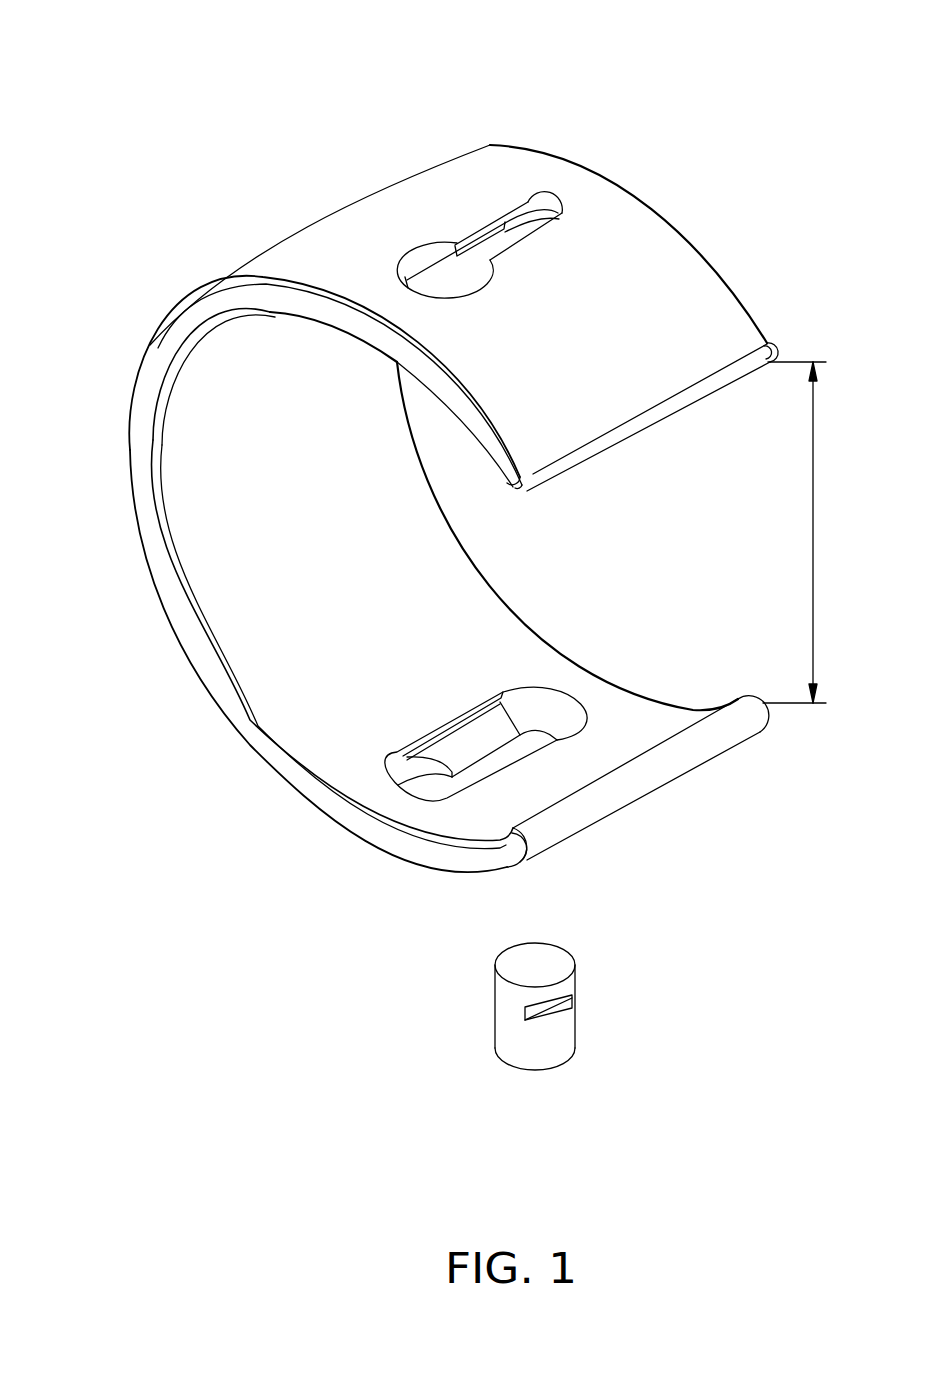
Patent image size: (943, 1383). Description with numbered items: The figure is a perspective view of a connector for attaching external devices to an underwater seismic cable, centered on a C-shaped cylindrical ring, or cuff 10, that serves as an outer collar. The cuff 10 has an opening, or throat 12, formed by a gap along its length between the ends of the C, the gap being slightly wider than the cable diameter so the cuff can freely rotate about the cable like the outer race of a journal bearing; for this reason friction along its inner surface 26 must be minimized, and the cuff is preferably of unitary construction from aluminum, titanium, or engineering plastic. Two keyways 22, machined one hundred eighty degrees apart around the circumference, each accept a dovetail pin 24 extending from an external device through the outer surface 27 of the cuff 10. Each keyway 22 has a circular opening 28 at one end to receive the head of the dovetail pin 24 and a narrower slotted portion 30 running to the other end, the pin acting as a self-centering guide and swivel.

The cuff 10 is at (697, 148).
The throat 12 is at (813, 528).
The keyway 22 is at (430, 783).
The dovetail pin 24 is at (565, 1038).
The inner surface 26 is at (203, 532).
The outer surface 27 is at (265, 270).
The circular opening 28 is at (443, 267).
The slotted portion 30 is at (538, 213).